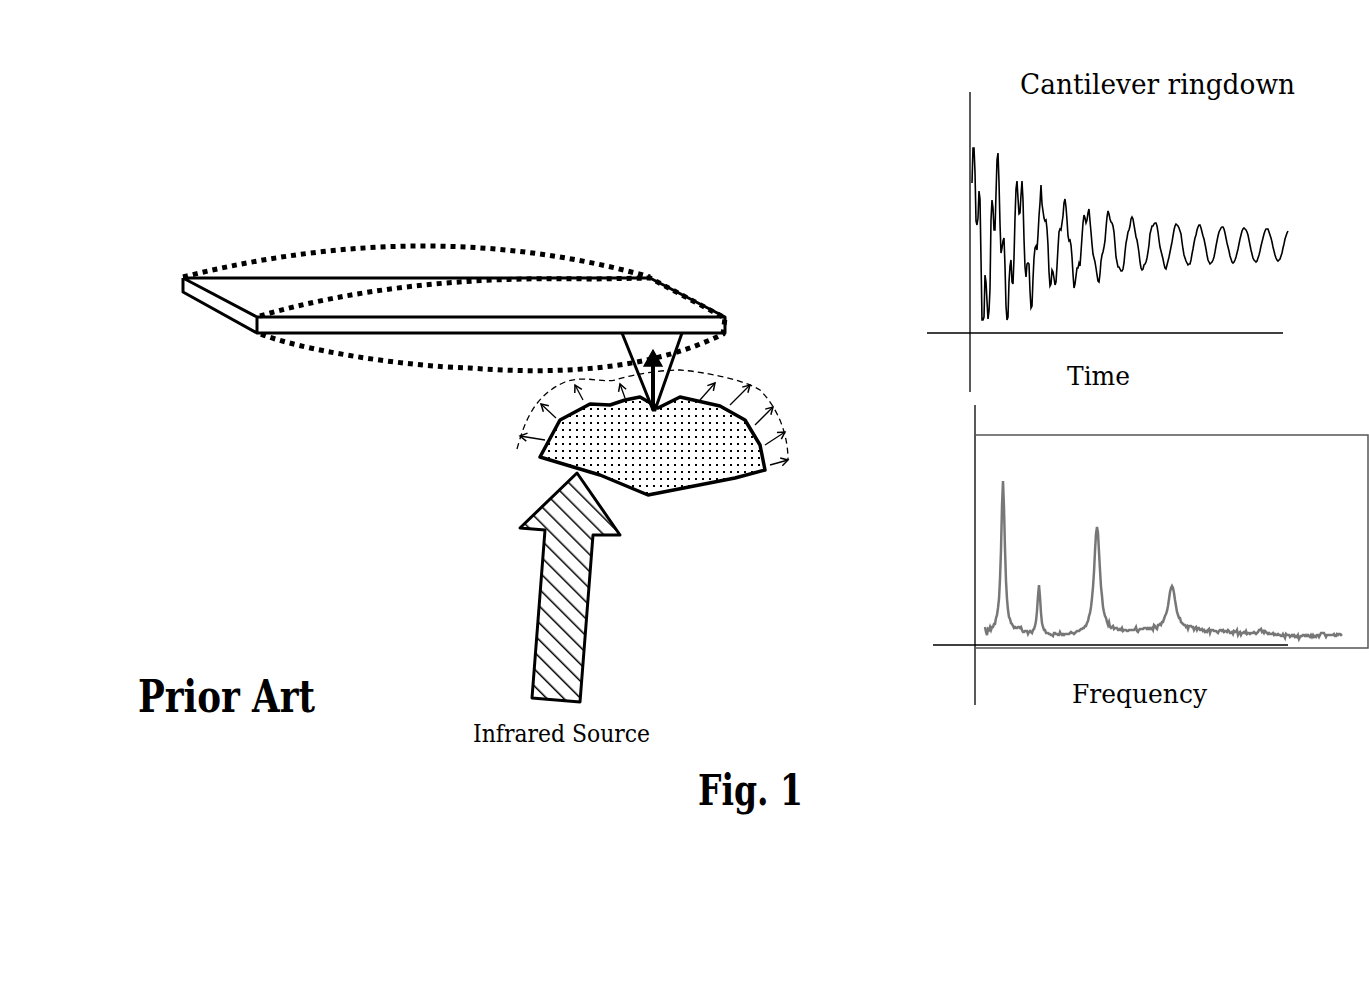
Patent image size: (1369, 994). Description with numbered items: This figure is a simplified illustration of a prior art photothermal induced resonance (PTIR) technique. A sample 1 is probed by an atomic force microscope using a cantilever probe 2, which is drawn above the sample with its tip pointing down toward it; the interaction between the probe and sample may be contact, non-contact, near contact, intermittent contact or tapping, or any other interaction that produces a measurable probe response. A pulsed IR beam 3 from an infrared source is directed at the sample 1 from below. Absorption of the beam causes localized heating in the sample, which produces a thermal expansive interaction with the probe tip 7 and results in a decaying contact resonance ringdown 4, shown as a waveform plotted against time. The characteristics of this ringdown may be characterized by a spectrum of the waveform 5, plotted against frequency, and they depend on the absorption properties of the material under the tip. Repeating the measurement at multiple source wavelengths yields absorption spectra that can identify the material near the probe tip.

The sample 1 is at (797, 462).
The cantilever probe 2 is at (208, 313).
The pulsed IR beam 3 is at (535, 602).
The decaying contact resonance ringdown 4 is at (1100, 217).
The spectrum of the waveform 5 is at (1180, 510).
The probe tip 7 is at (660, 372).